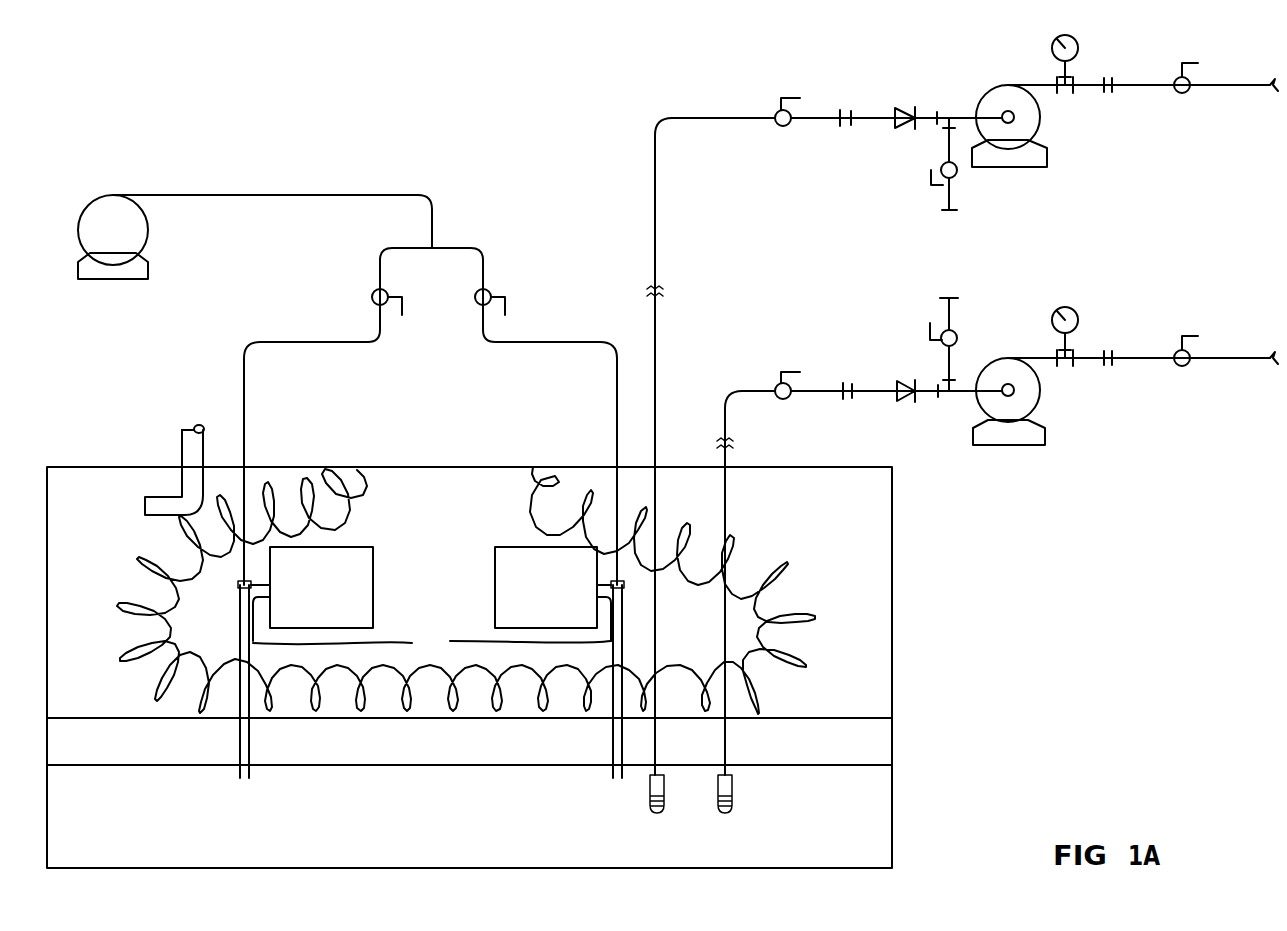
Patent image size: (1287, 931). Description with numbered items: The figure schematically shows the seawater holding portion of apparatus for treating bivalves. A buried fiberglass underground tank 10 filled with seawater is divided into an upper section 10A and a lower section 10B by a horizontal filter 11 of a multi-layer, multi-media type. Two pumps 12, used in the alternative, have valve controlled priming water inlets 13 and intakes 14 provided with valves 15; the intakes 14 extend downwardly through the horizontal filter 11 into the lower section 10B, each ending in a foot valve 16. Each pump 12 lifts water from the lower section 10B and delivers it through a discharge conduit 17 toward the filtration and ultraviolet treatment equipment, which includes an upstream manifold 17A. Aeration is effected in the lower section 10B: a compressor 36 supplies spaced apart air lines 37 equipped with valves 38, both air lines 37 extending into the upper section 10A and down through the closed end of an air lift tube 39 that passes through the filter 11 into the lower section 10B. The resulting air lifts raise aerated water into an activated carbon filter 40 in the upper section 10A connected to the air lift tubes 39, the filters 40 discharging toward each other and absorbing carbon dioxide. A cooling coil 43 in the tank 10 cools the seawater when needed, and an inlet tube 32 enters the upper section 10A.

The underground tank 10 is at (135, 383).
The upper section 10A is at (118, 549).
The lower section 10B is at (120, 832).
The horizontal filter 11 is at (826, 718).
The pump 12 is at (1010, 168).
The priming water inlet 13 is at (931, 183).
The intake 14 is at (726, 503).
The valve 15 is at (783, 126).
The foot valve 16 is at (720, 800).
The discharge conduit 17 is at (1142, 85).
The upstream manifold 17A is at (1183, 93).
The inlet tube 32 is at (181, 441).
The compressor 36 is at (147, 227).
The air line 37 is at (480, 345).
The valve 38 is at (477, 291).
The air lift tube 39 is at (432, 626).
The activated carbon filter 40 is at (495, 590).
The cooling coil 43 is at (123, 663).